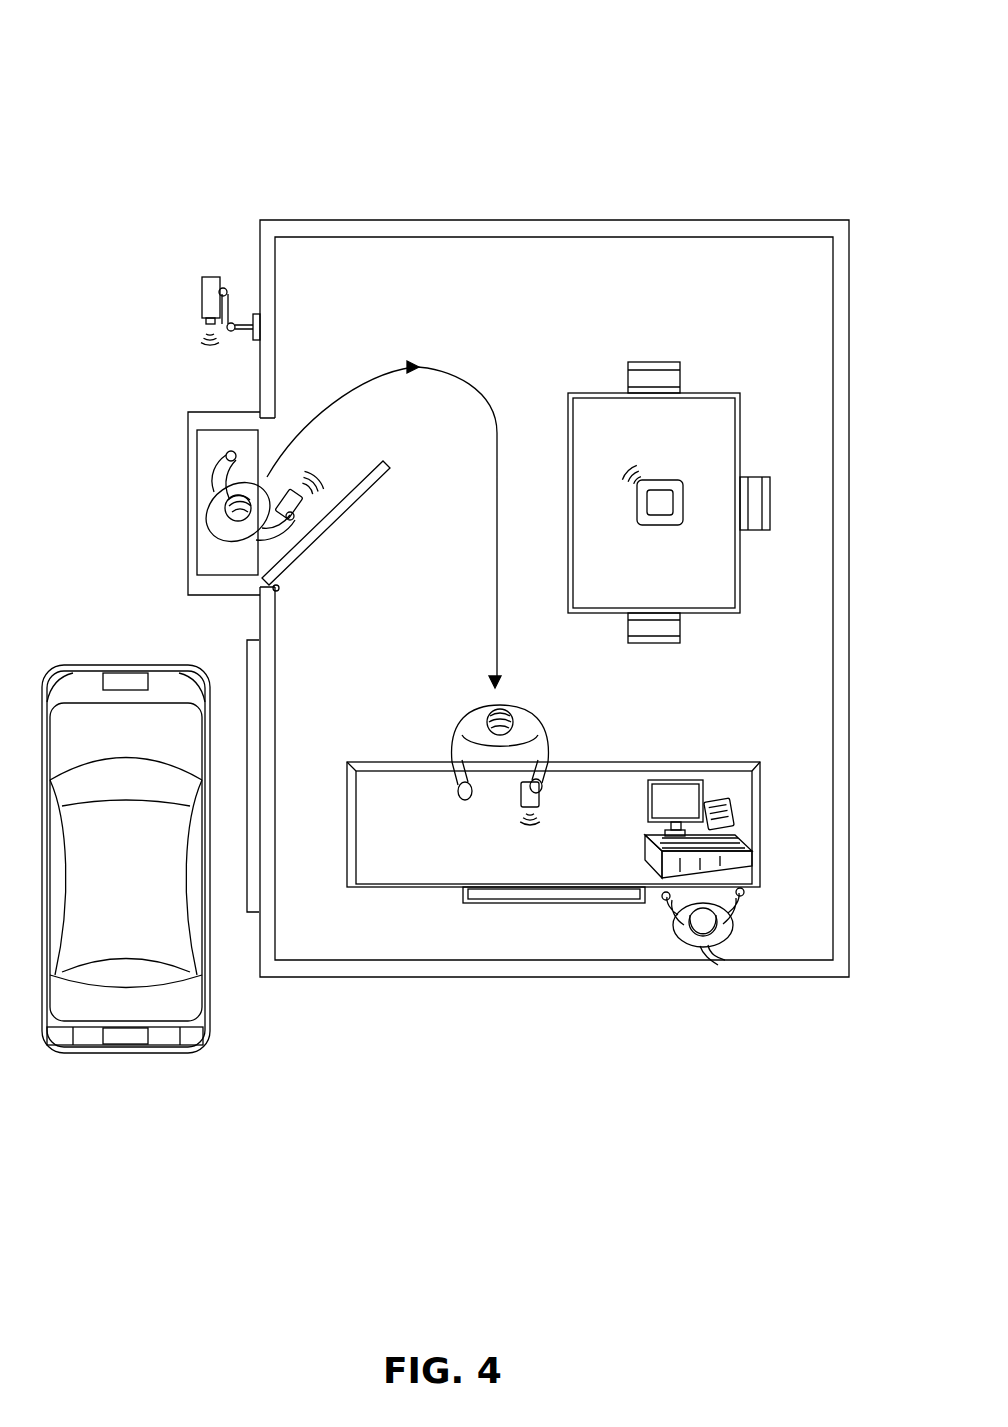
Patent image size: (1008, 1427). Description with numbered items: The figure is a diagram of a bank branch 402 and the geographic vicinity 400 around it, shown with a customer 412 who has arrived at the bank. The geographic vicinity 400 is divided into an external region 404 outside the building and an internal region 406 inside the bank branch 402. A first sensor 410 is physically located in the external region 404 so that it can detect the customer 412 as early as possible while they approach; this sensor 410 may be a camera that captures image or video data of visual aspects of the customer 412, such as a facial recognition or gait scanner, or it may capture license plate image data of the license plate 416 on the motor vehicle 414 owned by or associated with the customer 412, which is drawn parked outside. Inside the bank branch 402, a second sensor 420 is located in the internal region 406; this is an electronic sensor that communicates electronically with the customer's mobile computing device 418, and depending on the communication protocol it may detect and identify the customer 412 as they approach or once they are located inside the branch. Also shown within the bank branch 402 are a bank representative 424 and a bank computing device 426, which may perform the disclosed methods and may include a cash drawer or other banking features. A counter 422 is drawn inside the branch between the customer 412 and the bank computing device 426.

The geographic vicinity 400 is at (828, 66).
The bank branch 402 is at (553, 230).
The external region 404 is at (103, 242).
The internal region 406 is at (588, 302).
The sensor 410 is at (202, 277).
The customer 412 is at (218, 505).
The motor vehicle 414 is at (197, 1010).
The license plate 416 is at (152, 660).
The mobile computing device 418 is at (305, 520).
The second sensor 420 is at (683, 480).
The counter 422 is at (398, 863).
The bank representative 424 is at (745, 928).
The bank computing device 426 is at (745, 850).